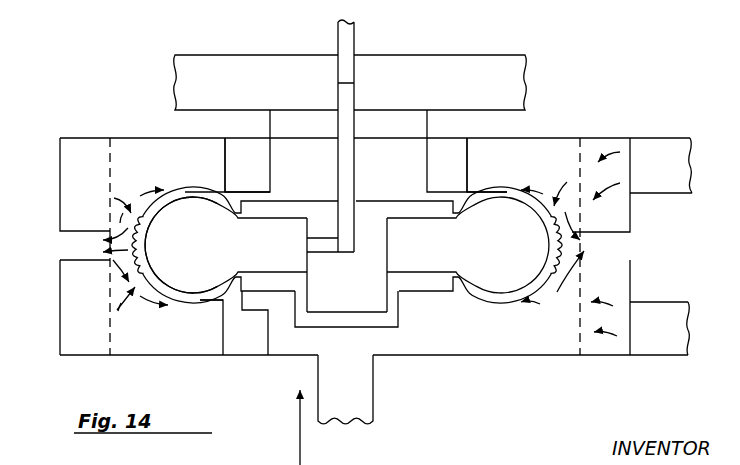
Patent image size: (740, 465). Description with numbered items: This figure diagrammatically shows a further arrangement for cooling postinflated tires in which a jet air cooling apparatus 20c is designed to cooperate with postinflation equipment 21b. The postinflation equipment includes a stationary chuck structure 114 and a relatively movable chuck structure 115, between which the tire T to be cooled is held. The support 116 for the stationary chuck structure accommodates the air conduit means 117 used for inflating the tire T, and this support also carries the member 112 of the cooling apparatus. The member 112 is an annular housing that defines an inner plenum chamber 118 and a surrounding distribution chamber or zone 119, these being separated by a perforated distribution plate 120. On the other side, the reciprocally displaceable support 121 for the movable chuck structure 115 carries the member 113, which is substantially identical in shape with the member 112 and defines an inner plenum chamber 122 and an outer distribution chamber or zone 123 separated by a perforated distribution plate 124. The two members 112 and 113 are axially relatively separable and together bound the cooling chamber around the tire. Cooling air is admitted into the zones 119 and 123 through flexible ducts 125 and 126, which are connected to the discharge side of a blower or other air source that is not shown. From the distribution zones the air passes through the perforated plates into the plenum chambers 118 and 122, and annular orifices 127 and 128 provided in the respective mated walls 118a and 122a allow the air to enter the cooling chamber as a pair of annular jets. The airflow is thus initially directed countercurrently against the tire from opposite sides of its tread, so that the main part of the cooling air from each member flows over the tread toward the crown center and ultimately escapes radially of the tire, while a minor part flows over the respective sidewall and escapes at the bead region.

The axially separable member 112 is at (535, 138).
The axially separable member 113 is at (513, 356).
The stationary chuck structure 114 is at (258, 213).
The relatively movable chuck structure 115 is at (437, 259).
The support 116 is at (287, 67).
The air conduit means 117 is at (355, 146).
The inner plenum chamber 118 is at (531, 173).
The mated wall 118a is at (206, 183).
The distribution chamber or zone 119 is at (100, 200).
The perforated distribution plate 120 is at (113, 160).
The reciprocally displaceable support 121 is at (366, 390).
The inner plenum chamber 122 is at (190, 350).
The mated wall 122a is at (203, 302).
The outer distribution chamber or zone 123 is at (100, 327).
The perforated distribution plate 124 is at (583, 333).
The flexible duct 125 is at (665, 195).
The flexible duct 126 is at (653, 307).
The annular orifice 127 is at (135, 188).
The annular orifice 128 is at (550, 303).
The jet air cooling apparatus 20c is at (605, 127).
The postinflation equipment 21b is at (395, 47).
The tire T is at (183, 198).